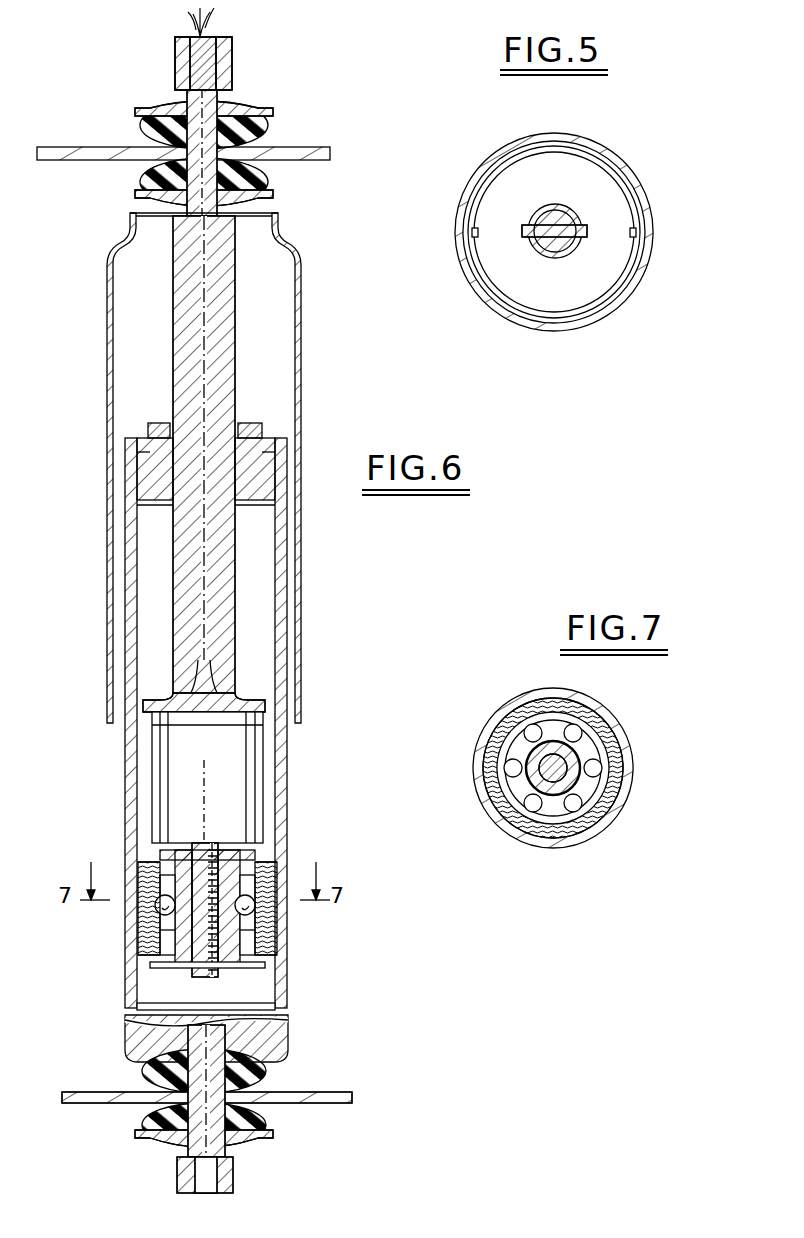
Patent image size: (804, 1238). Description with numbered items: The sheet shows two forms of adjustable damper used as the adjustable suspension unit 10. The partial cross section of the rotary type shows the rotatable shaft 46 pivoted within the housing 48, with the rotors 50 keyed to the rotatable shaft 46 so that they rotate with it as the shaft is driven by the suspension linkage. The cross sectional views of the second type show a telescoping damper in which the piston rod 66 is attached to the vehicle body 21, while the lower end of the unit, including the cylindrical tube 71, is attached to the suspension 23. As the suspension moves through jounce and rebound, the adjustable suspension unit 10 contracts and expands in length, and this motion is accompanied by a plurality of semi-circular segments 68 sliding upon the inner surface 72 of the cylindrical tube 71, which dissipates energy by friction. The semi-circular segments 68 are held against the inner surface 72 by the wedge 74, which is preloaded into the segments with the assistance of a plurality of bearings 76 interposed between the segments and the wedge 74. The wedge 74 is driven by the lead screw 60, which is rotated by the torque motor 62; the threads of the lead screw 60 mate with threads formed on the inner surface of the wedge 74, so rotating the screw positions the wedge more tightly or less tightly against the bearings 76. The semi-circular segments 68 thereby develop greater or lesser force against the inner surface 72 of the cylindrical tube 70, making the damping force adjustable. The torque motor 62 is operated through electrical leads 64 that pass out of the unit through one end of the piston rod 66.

In FIG. 6, the adjustable suspension unit 10 is at (159, 468).
In FIG. 6, the vehicle body 21 is at (312, 147).
In FIG. 6, the suspension 23 is at (330, 1090).
In FIG. 5, the rotatable shaft 46 is at (572, 212).
In FIG. 5, the housing 48 is at (648, 248).
In FIG. 5, the rotors 50 is at (598, 293).
In FIG. 6, the lead screw 60 is at (213, 850).
In FIG. 6, the torque motor 62 is at (262, 757).
In FIG. 6, the electrical leads 64 is at (214, 14).
In FIG. 6, the piston rod 66 is at (173, 280).
In FIG. 6, the semi-circular segments 68 is at (150, 870).
In FIG. 7, the semi-circular segments 68 is at (550, 845).
In FIG. 6, the cylindrical tube 70 is at (120, 392).
In FIG. 6, the cylindrical tube 71 is at (283, 565).
In FIG. 6, the inner surface 72 is at (143, 562).
In FIG. 7, the inner surface 72 is at (612, 766).
In FIG. 6, the wedge 74 is at (232, 965).
In FIG. 7, the wedge 74 is at (530, 784).
In FIG. 6, the bearings 76 is at (158, 908).
In FIG. 7, the bearings 76 is at (597, 760).